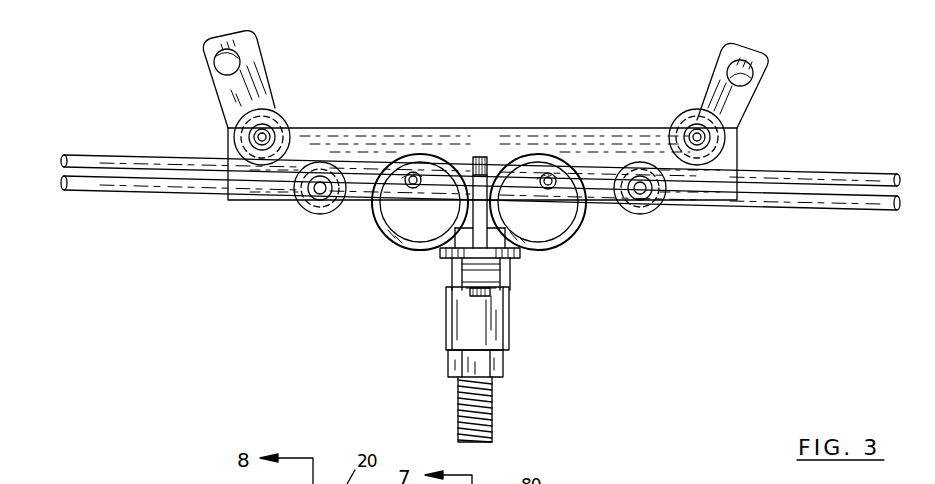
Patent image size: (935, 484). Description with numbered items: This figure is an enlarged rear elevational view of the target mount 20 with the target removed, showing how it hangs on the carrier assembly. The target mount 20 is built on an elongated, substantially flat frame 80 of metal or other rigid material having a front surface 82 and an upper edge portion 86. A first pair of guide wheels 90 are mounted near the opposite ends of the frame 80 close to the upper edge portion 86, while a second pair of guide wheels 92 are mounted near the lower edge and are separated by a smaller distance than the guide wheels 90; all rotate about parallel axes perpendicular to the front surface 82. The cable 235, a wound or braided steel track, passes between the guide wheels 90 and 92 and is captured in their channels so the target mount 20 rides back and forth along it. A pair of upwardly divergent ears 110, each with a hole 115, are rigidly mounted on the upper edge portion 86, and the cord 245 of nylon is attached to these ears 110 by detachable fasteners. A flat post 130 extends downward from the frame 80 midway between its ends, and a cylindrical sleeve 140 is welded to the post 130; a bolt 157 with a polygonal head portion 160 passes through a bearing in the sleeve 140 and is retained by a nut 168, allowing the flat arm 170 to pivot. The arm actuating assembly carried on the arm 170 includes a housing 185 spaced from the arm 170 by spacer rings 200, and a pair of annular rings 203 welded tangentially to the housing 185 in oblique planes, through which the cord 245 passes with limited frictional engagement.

The target mount 20 is at (504, 130).
The frame 80 is at (566, 135).
The front surface 82 is at (355, 140).
The upper edge portion 86 is at (438, 130).
The first pair of guide wheels 90 is at (275, 110).
The second pair of guide wheels 92 is at (316, 212).
The ears 110 is at (229, 95).
The hole 115 is at (221, 53).
The post 130 is at (503, 219).
The cylindrical sleeve 140 is at (460, 322).
The bolt 157 is at (492, 405).
The polygonal head portion 160 is at (452, 285).
The nut 168 is at (498, 363).
The arm 170 is at (490, 282).
The housing 185 is at (438, 247).
The spacer rings 200 is at (500, 262).
The annular rings 203 is at (392, 238).
The cable 235 is at (778, 172).
The cord 245 is at (770, 203).